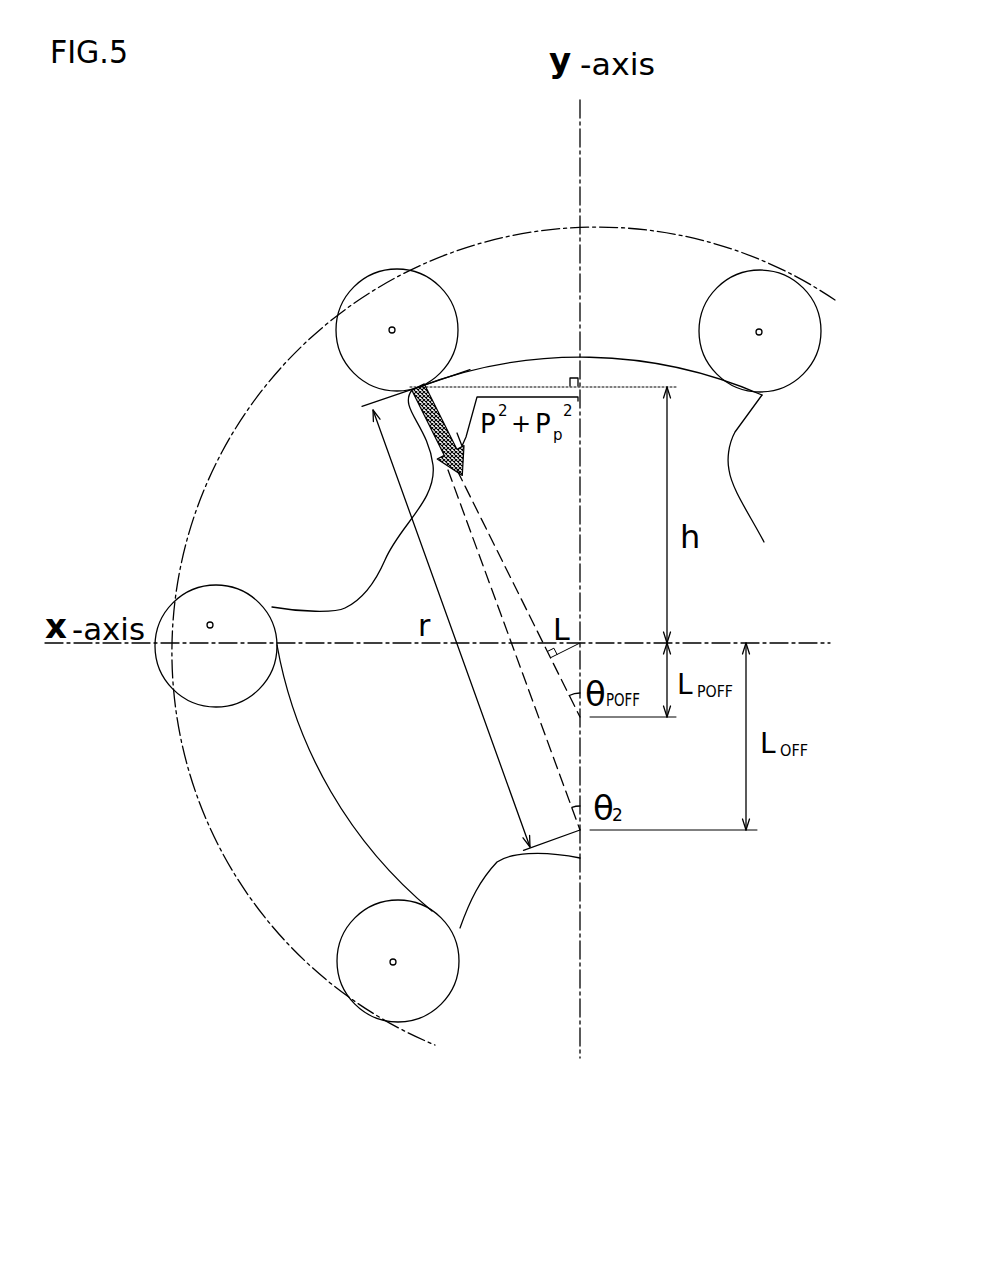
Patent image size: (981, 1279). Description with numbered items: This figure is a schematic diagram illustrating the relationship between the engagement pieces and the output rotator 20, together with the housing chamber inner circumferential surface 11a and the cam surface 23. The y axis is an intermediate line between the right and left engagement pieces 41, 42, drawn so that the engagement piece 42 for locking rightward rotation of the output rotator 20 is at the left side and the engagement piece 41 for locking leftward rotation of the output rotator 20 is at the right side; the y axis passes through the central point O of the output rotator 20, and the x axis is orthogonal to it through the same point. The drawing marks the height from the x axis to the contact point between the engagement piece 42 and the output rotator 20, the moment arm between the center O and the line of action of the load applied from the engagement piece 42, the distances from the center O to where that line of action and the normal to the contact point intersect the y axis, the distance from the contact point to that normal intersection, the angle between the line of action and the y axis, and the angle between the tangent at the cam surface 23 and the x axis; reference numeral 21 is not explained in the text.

The housing chamber inner circumferential surface 11a is at (646, 237).
The output rotator 20 is at (410, 520).
The cam surface 21 is at (298, 733).
The cam surface 23 is at (469, 360).
The engagement piece 41 is at (759, 332).
The engagement piece 42 is at (392, 330).